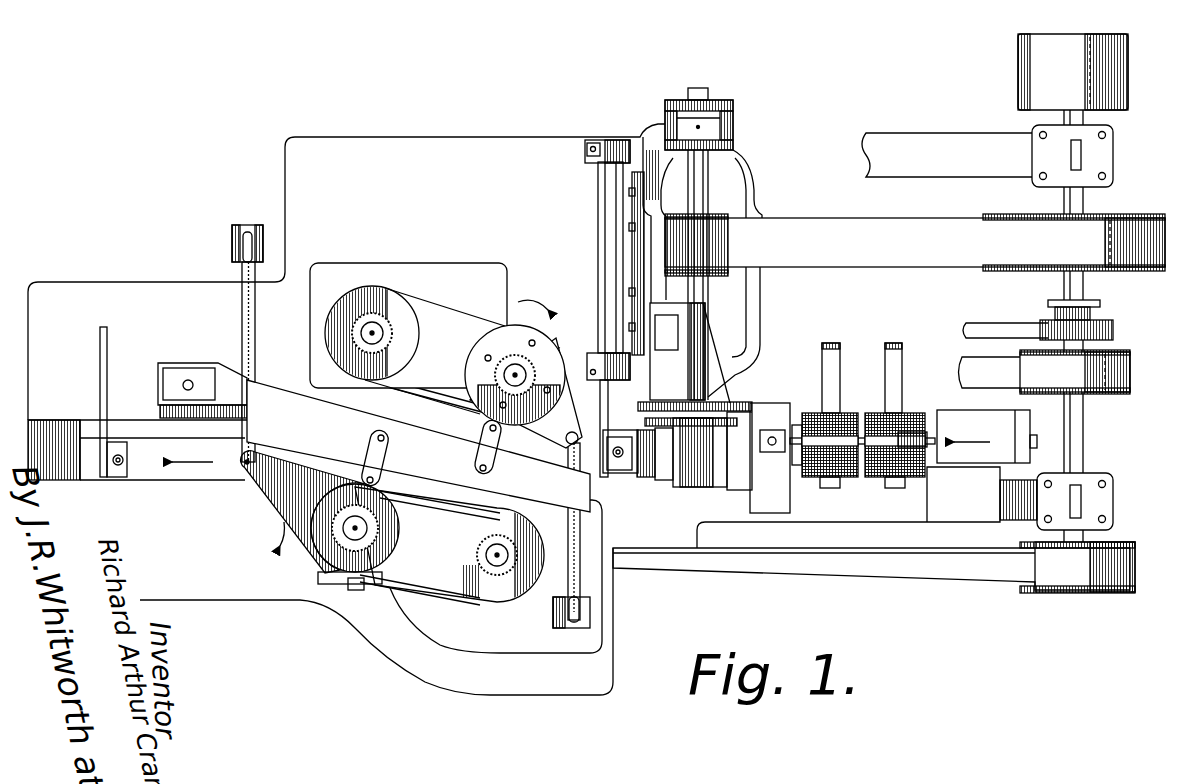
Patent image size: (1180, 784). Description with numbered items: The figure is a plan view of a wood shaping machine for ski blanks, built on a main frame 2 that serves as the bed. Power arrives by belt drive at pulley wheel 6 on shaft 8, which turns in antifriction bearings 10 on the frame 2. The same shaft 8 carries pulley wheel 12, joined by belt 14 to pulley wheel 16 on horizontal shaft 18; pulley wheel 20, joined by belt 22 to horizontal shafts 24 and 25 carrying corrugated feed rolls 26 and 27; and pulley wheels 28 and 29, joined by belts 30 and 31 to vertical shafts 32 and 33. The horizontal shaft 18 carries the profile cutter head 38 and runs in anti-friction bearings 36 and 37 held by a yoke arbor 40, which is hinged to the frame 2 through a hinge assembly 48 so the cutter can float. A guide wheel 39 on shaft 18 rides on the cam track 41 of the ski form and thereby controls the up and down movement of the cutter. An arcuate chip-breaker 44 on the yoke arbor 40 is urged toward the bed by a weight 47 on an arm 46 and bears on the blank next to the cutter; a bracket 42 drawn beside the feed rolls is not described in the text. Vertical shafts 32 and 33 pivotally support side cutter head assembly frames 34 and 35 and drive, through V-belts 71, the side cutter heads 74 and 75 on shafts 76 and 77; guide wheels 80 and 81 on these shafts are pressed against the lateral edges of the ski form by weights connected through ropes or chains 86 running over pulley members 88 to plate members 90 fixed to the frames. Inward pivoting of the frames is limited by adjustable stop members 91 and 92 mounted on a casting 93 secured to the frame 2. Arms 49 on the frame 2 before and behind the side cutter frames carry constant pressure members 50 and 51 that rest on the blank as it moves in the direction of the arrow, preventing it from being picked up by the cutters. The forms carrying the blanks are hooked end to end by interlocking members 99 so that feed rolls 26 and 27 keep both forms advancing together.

The main frame 2 is at (252, 608).
The pulley wheel 6 is at (1118, 82).
The shaft 8 is at (1078, 203).
The antifriction bearings 10 is at (1108, 153).
The pulley wheel 12 is at (1158, 216).
The belt 14 is at (940, 259).
The pulley wheel 16 is at (738, 220).
The horizontal shaft 18 is at (699, 178).
The pulley wheel 20 is at (1105, 320).
The belt 22 is at (1001, 335).
The horizontal shaft 24 is at (836, 345).
The horizontal shaft 25 is at (896, 345).
The corrugated feed roll 26 is at (848, 480).
The corrugated feed roll 27 is at (920, 480).
The pulley wheel 28 is at (1115, 355).
The pulley wheel 29 is at (1115, 556).
The belt 30 is at (990, 372).
The belt 31 is at (871, 569).
The vertical shaft 32 is at (375, 330).
The vertical shaft 33 is at (498, 554).
The side cutter head assembly frame 34 is at (435, 351).
The side cutter head assembly frame 35 is at (449, 544).
The anti-friction bearing 36 is at (733, 108).
The anti-friction bearing 37 is at (725, 392).
The profile cutter head 38 is at (682, 482).
The guide wheel 39 is at (737, 406).
The yoke arbor 40 is at (754, 186).
The cam track 41 is at (1003, 418).
The bracket 42 is at (770, 482).
The chip-breaker 44 is at (800, 500).
The arm 46 is at (806, 436).
The weight 47 is at (912, 432).
The hinge assembly 48 is at (598, 158).
The arm 49 is at (107, 388).
The constant pressure member 50 is at (626, 474).
The constant pressure member 51 is at (118, 479).
The V-belts 71 is at (482, 318).
The side cutter head 74 is at (557, 345).
The side cutter head 75 is at (334, 588).
The cutter shaft 76 is at (513, 373).
The cutter shaft 77 is at (354, 527).
The guide wheel 80 is at (581, 263).
The guide wheel 81 is at (308, 558).
The ropes or chains 86 is at (256, 312).
The pulley members 88 is at (264, 240).
The plate member 90 is at (435, 421).
The adjustable stop member 91 is at (497, 445).
The adjustable stop member 92 is at (392, 456).
The casting 93 is at (374, 437).
The interlocking members 99 is at (258, 480).